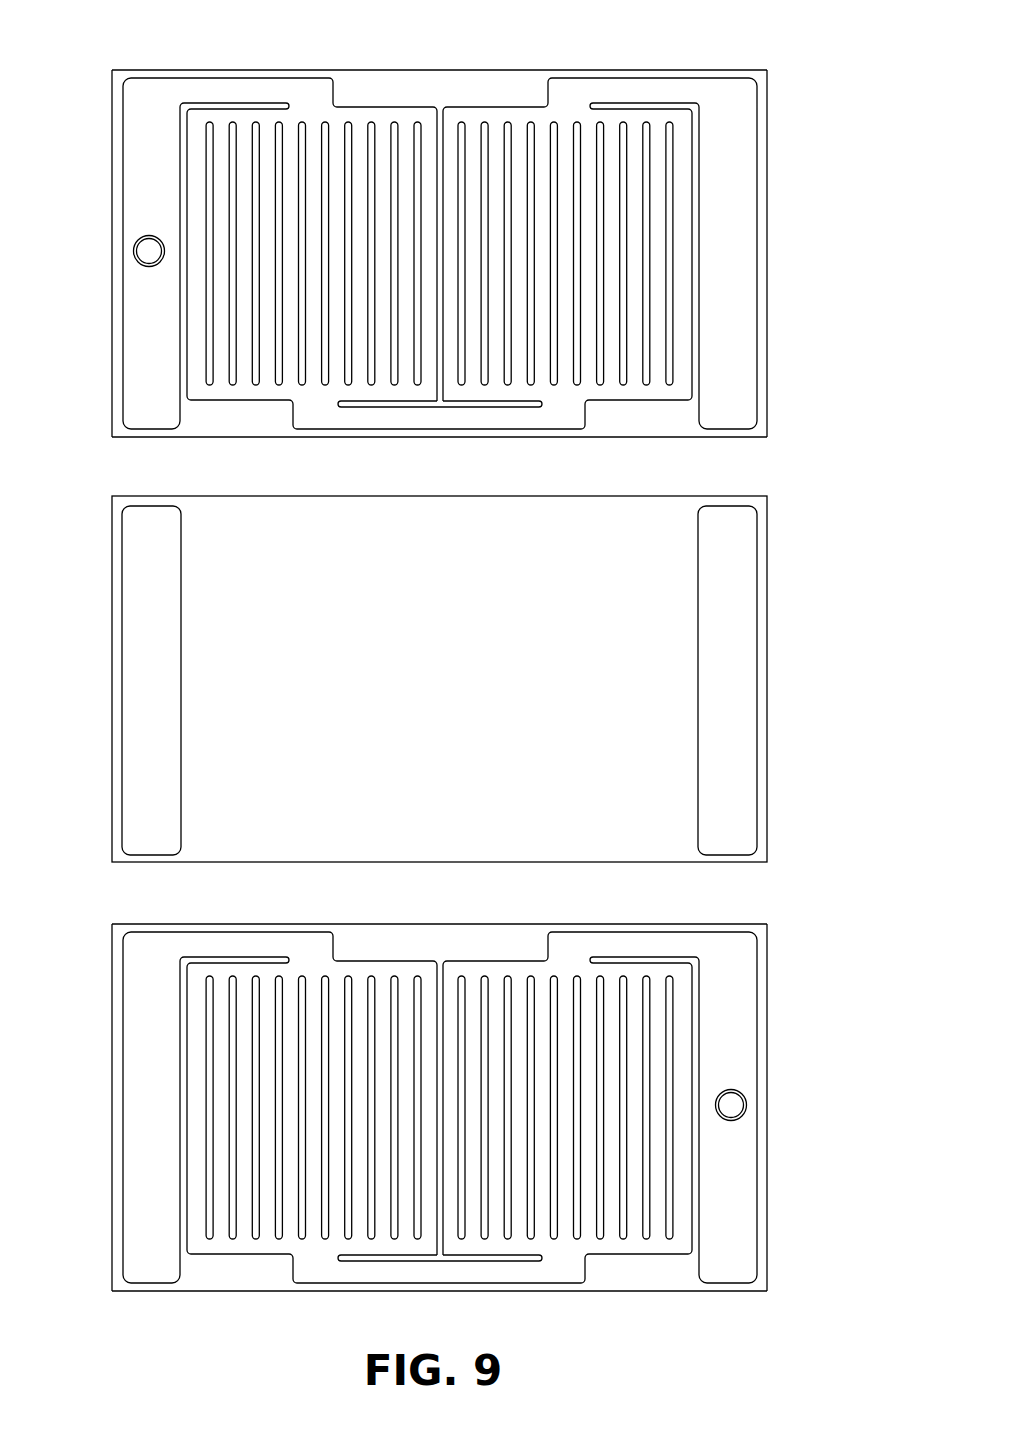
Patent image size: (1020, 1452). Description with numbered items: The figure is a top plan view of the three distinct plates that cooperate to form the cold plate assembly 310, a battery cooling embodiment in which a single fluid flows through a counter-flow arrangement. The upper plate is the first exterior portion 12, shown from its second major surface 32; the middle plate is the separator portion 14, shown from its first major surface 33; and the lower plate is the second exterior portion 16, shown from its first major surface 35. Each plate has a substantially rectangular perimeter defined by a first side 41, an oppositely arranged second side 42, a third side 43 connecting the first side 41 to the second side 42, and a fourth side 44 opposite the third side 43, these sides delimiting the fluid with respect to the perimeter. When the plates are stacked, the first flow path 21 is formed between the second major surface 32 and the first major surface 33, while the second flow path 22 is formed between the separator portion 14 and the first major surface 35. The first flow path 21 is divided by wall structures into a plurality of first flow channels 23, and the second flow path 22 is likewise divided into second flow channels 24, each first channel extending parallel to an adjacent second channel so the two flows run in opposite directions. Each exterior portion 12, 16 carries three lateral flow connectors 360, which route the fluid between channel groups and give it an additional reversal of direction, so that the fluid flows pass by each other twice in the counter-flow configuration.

The cold plate assembly 310 is at (438, 672).
The first exterior portion 12 is at (440, 278).
The second major surface 32 is at (647, 420).
The separator portion 14 is at (439, 658).
The first major surface 33 is at (298, 518).
The second exterior portion 16 is at (440, 1083).
The first major surface 35 is at (458, 946).
The first flow path 21 is at (439, 300).
The first flow channels 23 is at (310, 358).
The second flow path 22 is at (439, 1061).
The second flow channels 24 is at (383, 988).
The lateral flow connectors 360 is at (263, 90).
The first side 41 is at (112, 257).
The second side 42 is at (768, 257).
The third side 43 is at (153, 437).
The fourth side 44 is at (166, 70).